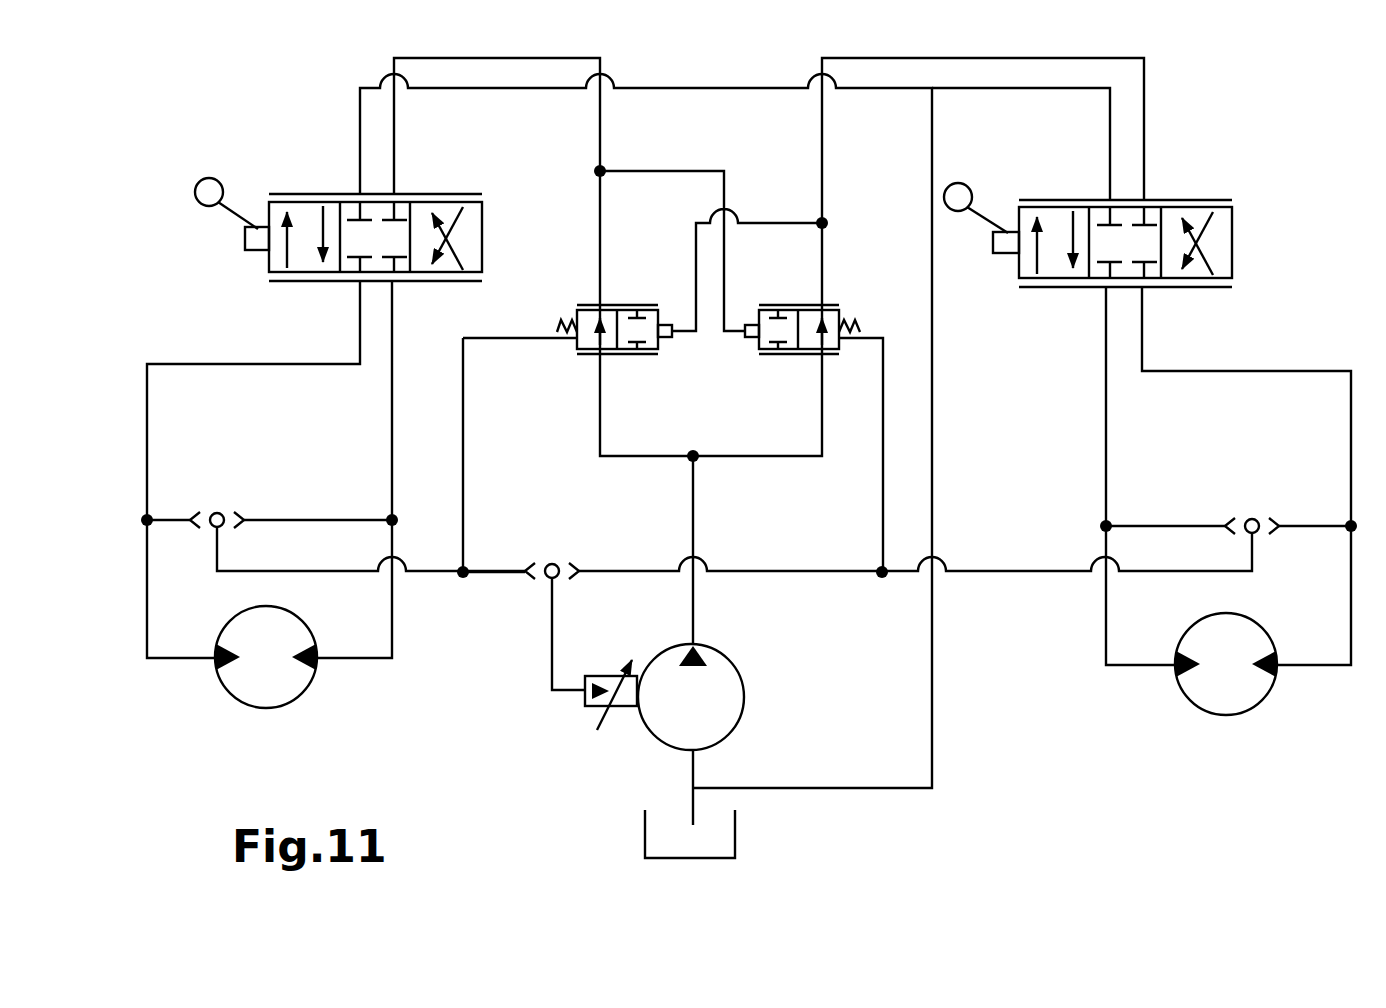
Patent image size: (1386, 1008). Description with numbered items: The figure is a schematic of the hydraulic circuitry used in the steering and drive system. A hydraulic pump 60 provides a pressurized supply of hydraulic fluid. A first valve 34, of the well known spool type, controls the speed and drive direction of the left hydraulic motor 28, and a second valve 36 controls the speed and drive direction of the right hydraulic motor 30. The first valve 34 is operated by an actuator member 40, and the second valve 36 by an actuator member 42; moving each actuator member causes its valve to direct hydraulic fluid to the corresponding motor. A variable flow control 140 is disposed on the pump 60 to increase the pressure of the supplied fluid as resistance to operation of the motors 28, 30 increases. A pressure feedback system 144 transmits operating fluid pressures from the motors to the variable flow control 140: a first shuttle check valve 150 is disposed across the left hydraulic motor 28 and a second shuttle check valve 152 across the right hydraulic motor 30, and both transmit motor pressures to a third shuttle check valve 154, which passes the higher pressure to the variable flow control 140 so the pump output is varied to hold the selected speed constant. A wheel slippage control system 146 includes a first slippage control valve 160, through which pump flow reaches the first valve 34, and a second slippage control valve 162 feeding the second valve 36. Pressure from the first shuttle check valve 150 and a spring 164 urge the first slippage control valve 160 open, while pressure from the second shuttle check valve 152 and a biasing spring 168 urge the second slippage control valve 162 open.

The left hydraulic motor 28 is at (266, 681).
The right hydraulic motor 30 is at (1216, 697).
The first valve 34 is at (468, 190).
The second valve 36 is at (1193, 193).
The actuator member 40 is at (256, 234).
The actuator member 42 is at (1006, 240).
The hydraulic pump 60 is at (653, 751).
The variable flow control 140 is at (587, 706).
The pressure feedback system 144 is at (545, 514).
The wheel slippage control system 146 is at (738, 188).
The first shuttle check valve 150 is at (238, 504).
The second shuttle check valve 152 is at (1258, 511).
The third shuttle check valve 154 is at (574, 558).
The first slippage control valve 160 is at (572, 357).
The second slippage control valve 162 is at (771, 364).
The spring 164 is at (566, 324).
The biasing spring 168 is at (851, 324).